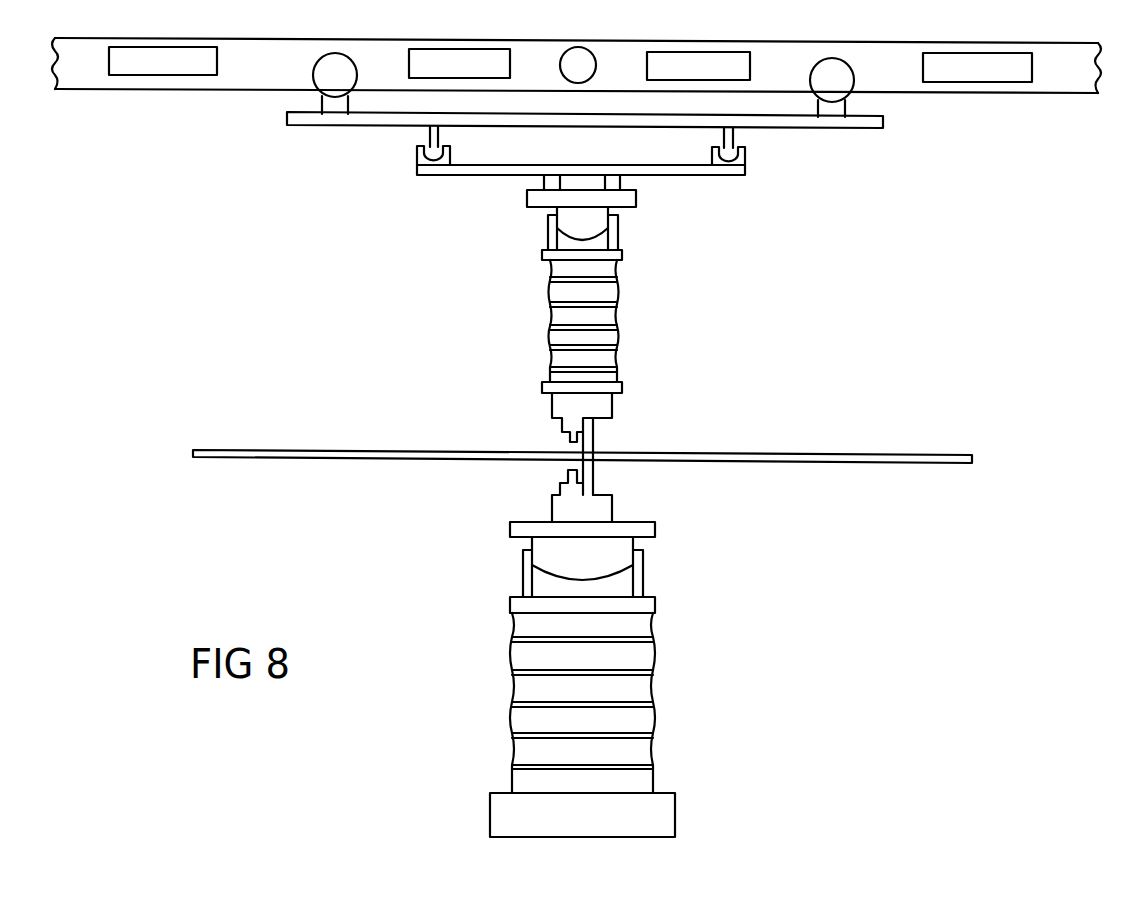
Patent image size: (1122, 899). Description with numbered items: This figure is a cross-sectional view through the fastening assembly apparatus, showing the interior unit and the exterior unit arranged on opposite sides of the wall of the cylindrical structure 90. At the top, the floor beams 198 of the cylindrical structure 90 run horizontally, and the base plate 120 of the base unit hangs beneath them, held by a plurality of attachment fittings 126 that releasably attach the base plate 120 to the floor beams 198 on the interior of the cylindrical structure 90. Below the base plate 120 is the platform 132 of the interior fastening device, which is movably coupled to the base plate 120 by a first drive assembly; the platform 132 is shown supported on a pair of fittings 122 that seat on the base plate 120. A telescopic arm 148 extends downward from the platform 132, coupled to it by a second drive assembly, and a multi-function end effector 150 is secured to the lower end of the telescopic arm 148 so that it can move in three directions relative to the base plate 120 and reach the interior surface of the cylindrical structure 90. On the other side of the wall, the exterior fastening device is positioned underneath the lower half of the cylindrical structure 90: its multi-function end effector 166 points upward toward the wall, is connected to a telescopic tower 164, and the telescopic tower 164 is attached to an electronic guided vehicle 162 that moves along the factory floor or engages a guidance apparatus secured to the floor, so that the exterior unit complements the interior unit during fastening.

The floor beams 198 is at (1012, 50).
The attachment fittings 126 is at (312, 77).
The base plate 120 is at (884, 123).
The clip 122 is at (425, 133).
The platform 132 is at (745, 170).
The telescopic arm 148 is at (617, 328).
The multi-function end effector 150 is at (552, 405).
The cylindrical structure 90 is at (947, 455).
The multi-function end effector 166 is at (510, 530).
The telescopic tower 164 is at (655, 717).
The electronic guided vehicle 162 is at (490, 820).